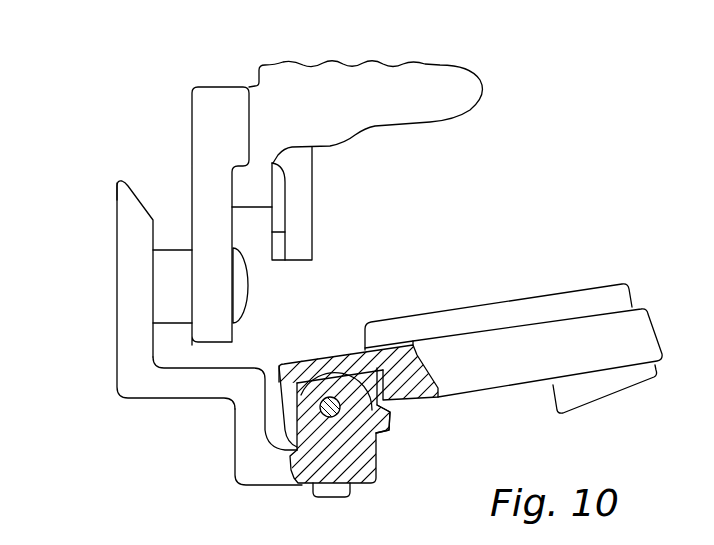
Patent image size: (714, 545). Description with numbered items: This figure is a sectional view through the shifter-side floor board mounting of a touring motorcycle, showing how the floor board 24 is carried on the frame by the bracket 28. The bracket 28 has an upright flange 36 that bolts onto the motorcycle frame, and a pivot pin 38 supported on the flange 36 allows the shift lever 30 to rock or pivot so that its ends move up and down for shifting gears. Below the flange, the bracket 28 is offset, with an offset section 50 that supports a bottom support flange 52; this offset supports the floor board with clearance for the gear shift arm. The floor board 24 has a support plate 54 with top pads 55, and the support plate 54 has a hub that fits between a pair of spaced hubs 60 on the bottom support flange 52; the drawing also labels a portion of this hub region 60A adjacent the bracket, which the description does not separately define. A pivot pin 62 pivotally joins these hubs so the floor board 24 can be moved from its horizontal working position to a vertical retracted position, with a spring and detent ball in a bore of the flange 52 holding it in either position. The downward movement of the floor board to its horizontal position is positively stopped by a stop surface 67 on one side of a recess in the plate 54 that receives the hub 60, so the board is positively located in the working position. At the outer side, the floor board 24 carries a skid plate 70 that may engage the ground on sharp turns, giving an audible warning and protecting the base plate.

The floor board 24 is at (473, 398).
The bracket 28 is at (130, 342).
The shift lever 30 is at (217, 108).
The upright flange 36 is at (125, 227).
The pivot pin 38 is at (247, 281).
The offset section 50 is at (248, 406).
The bottom support flange 52 is at (267, 462).
The support plate 54 is at (397, 383).
The top pads 55 is at (553, 307).
The hubs 60 is at (352, 393).
The clamp body tab 60A is at (278, 421).
The pivot pin 62 is at (313, 485).
The stop surface 67 is at (377, 447).
The skid plate 70 is at (600, 385).